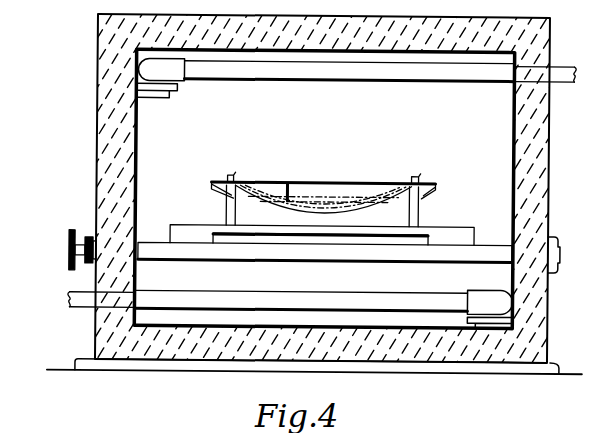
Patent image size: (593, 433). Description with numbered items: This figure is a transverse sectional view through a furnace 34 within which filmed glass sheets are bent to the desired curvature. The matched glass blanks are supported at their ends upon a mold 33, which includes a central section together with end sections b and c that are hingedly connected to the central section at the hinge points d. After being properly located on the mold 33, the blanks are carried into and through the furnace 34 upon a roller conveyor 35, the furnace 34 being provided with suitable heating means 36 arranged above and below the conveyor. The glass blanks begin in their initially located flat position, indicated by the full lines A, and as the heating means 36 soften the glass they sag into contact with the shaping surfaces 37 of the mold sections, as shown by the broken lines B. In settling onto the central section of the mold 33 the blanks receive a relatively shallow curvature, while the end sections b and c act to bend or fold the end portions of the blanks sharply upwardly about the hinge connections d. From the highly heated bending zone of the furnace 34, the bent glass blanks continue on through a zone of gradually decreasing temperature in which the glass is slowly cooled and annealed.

The mold 33 is at (229, 179).
The furnace 34 is at (112, 202).
The roller conveyor 35 is at (233, 247).
The heating means 36 is at (345, 68).
The shaping surfaces 37 is at (289, 181).
The full lines A is at (336, 179).
The broken lines B is at (358, 207).
The end section b is at (213, 189).
The end section c is at (438, 195).
The hinge connection d is at (255, 193).